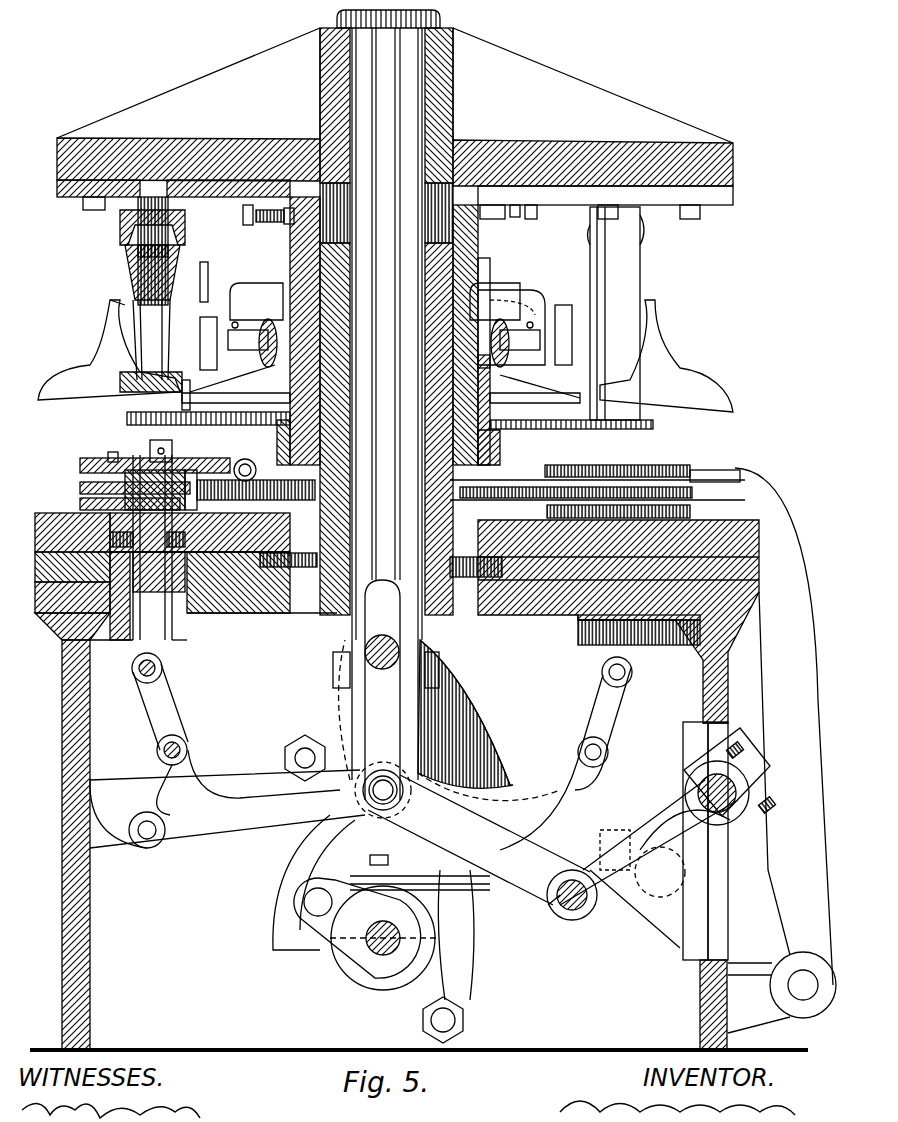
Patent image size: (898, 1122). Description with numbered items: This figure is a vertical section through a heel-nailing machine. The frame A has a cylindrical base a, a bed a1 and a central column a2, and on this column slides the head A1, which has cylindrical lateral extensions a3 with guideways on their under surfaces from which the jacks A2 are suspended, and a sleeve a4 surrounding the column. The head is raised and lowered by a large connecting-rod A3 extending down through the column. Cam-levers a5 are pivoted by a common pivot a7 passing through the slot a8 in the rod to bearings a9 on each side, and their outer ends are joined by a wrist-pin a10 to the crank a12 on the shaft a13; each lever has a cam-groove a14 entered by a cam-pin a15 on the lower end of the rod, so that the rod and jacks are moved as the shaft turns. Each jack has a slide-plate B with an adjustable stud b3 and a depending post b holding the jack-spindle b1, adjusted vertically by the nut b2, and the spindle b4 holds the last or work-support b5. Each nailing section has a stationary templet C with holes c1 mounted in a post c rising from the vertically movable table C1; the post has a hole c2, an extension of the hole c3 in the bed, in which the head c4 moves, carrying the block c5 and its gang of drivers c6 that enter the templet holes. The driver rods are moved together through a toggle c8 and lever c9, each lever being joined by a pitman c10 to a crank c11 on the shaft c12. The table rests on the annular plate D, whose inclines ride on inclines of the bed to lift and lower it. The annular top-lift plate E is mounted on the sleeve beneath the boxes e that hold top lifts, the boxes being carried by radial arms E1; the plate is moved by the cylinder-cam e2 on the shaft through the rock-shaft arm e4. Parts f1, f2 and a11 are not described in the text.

The head A1 is at (565, 160).
The lateral extension a3 is at (245, 142).
The connecting-rod A3 is at (383, 325).
The slide-plate B is at (225, 198).
The nut b2 is at (122, 226).
The adjustable stud b3 is at (270, 226).
The post b is at (130, 263).
The jack-spindle b1 is at (140, 283).
The spindle b4 is at (135, 366).
The last or work-support b5 is at (125, 400).
The arm E1 is at (215, 365).
The jack A2 is at (645, 235).
The central column a2 is at (478, 275).
The sleeve a4 is at (517, 312).
The box or receptacle e is at (666, 356).
The annular plate E is at (640, 425).
The rack / belt guide f1 is at (95, 458).
The post c is at (80, 476).
The block c5 is at (160, 450).
The head c4 is at (244, 458).
The hole c1 is at (155, 446).
The templet C is at (155, 469).
The driver c6 is at (204, 472).
The frame A is at (216, 612).
The table C1 is at (55, 520).
The annular plate D is at (45, 562).
The hole c3 is at (62, 615).
The hole c2 is at (25, 538).
The slot a8 is at (385, 679).
The common pivot a7 is at (362, 652).
The bearing a9 is at (440, 660).
The bed a1 is at (556, 612).
The cam-lever a5 is at (462, 733).
The cam-groove a14 is at (478, 773).
The toggle c8 is at (175, 709).
The lever c9 is at (348, 820).
The cylindrical base a is at (728, 680).
The belt f'' f2 is at (782, 750).
The crank a12 is at (705, 782).
The connecting rod a'' a11 is at (618, 880).
The wrist-pin a10 is at (572, 912).
The shaft a13 is at (678, 945).
The pitman or connecting-rod c10 is at (315, 882).
The cam-pin a15 is at (379, 849).
The arm or lever e4 is at (420, 956).
The cylinder-cam e2 is at (432, 970).
The shaft c12 is at (378, 955).
The crank c11 is at (318, 930).